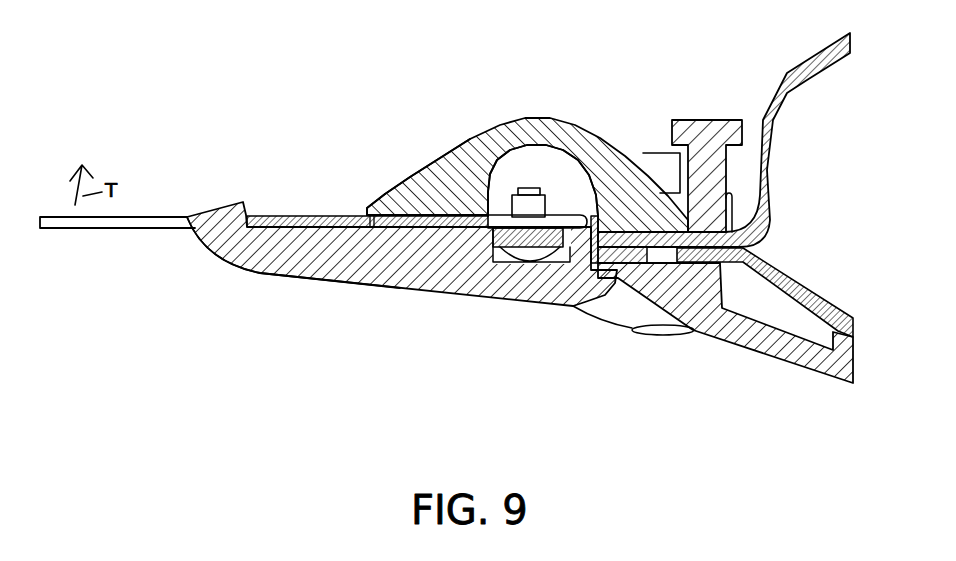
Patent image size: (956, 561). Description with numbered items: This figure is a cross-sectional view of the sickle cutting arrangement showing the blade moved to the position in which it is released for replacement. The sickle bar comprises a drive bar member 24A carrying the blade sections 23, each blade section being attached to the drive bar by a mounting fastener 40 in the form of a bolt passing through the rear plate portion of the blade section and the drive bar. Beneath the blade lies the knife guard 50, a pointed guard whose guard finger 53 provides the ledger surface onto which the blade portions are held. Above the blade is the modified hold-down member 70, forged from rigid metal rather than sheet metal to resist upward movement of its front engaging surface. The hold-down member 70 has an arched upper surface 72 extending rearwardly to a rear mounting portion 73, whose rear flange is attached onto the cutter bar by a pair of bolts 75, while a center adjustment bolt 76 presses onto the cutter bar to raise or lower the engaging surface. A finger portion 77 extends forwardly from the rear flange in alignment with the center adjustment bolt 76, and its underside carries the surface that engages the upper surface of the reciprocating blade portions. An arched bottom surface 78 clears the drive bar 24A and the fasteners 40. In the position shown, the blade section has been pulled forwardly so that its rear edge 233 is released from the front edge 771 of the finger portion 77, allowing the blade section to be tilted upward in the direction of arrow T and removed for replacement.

The blade sections 23 is at (141, 217).
The drive bar member 24A is at (495, 250).
The mounting fastener 40 is at (540, 203).
The knife guard 50 is at (422, 275).
The guard finger 53 is at (300, 248).
The hold-down member 70 is at (560, 100).
The arched upper surface 72 is at (463, 132).
The rear mounting portion 73 is at (633, 157).
The bolts 75 is at (662, 175).
The center adjustment bolt 76 is at (727, 120).
The finger portion 77 is at (440, 170).
The arched bottom surface 78 is at (523, 145).
The rear edge 233 is at (383, 238).
The front edge 771 is at (363, 207).